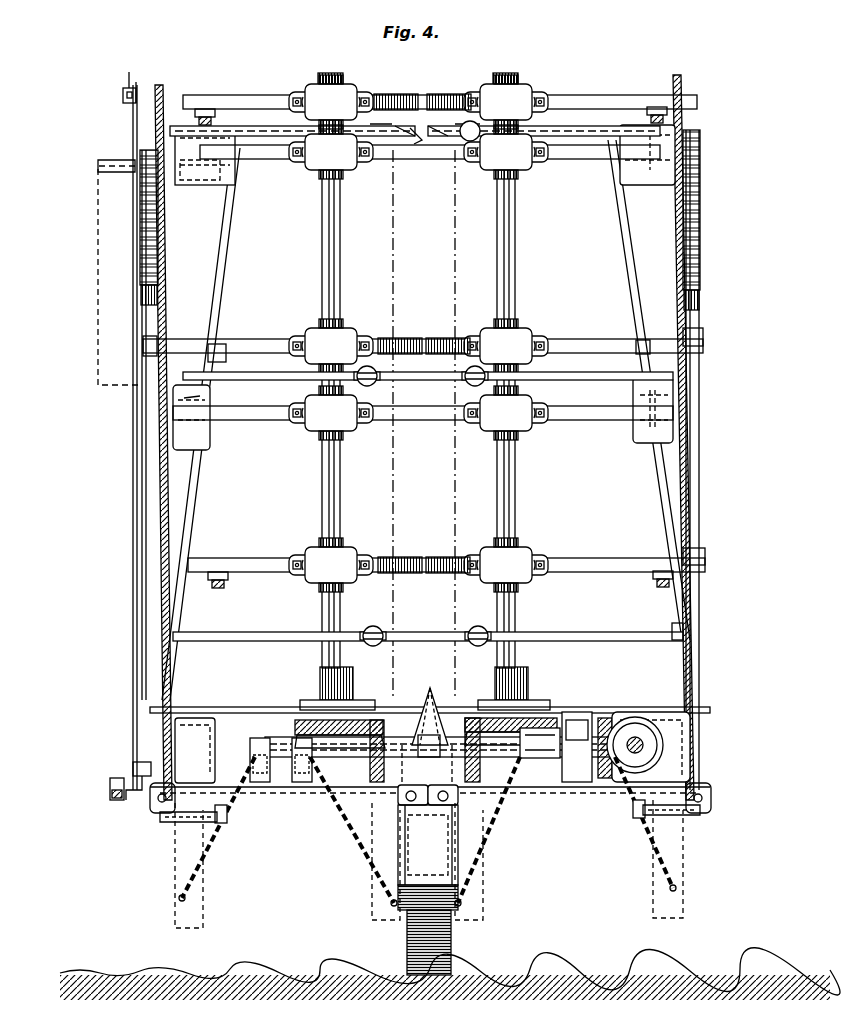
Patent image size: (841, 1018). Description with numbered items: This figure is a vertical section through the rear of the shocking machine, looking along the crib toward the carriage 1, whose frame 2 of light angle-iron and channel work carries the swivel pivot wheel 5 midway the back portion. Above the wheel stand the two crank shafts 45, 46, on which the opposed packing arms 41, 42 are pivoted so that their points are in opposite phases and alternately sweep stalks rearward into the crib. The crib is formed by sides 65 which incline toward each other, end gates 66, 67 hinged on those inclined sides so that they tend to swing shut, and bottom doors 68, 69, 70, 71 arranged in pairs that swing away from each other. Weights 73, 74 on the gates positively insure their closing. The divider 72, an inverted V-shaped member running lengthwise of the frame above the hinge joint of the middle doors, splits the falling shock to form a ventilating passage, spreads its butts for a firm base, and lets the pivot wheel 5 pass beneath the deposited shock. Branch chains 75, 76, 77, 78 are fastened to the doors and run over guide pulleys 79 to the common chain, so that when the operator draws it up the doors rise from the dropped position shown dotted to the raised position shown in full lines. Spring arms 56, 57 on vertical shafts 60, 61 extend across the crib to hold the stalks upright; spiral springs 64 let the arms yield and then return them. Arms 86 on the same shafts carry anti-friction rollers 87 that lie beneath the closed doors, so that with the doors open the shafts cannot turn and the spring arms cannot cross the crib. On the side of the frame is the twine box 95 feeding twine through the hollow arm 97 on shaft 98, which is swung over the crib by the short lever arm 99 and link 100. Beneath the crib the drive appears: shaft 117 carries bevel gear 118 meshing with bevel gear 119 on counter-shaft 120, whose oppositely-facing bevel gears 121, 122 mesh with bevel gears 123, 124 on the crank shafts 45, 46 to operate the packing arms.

The carriage 1 is at (398, 800).
The frame 2 is at (462, 797).
The pivot wheel 5 is at (452, 955).
The packing arm 41 is at (388, 96).
The packing arm 42 is at (442, 96).
The crank shaft 45 is at (340, 487).
The crank shaft 46 is at (515, 478).
The spring arm 56 is at (392, 140).
The spring arm 57 is at (440, 140).
The vertical shaft 60 is at (165, 468).
The vertical shaft 61 is at (692, 436).
The spiral spring 64 is at (142, 246).
The side 65 is at (222, 252).
The end gate 66 is at (283, 628).
The end gate 67 is at (596, 636).
The bottom door 68 is at (272, 796).
The bottom door 69 is at (338, 798).
The bottom door 70 is at (522, 785).
The bottom door 71 is at (583, 782).
The divider 72 is at (433, 690).
The weight 73 is at (370, 386).
The weight 74 is at (473, 386).
The branch chain 75 is at (208, 858).
The branch chain 76 is at (352, 845).
The branch chain 77 is at (498, 848).
The branch chain 78 is at (648, 850).
The guide pulley 79 is at (252, 755).
The arm 86 is at (190, 824).
The anti-friction roller 87 is at (224, 820).
The twine box 95 is at (100, 210).
The hollow arm 97 is at (138, 96).
The shaft 98 is at (142, 626).
The short lever arm 99 is at (130, 768).
The link 100 is at (116, 800).
The shaft 117 is at (672, 714).
The bevel gear 118 is at (636, 730).
The bevel gear 119 is at (604, 716).
The counter-shaft 120 is at (577, 712).
The bevel gear 121 is at (420, 710).
The bevel gear 122 is at (478, 716).
The bevel gear 123 is at (362, 718).
The bevel gear 124 is at (540, 726).